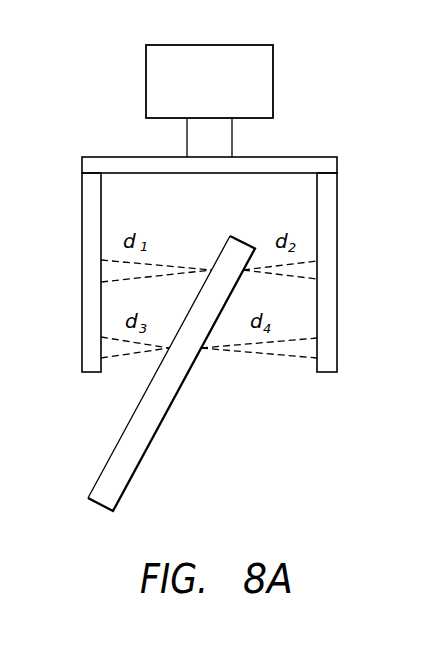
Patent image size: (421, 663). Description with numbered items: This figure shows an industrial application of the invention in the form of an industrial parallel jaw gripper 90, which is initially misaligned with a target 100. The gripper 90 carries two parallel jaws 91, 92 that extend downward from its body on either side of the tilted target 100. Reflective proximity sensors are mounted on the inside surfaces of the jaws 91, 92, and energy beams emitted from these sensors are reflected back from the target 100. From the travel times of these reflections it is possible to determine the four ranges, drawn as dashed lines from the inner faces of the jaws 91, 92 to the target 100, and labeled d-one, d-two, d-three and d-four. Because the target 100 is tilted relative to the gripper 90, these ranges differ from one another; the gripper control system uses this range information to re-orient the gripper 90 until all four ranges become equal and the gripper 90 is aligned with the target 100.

The industrial parallel jaw gripper 90 is at (297, 144).
The parallel jaw 91 is at (93, 225).
The parallel jaw 92 is at (327, 228).
The target 100 is at (120, 470).